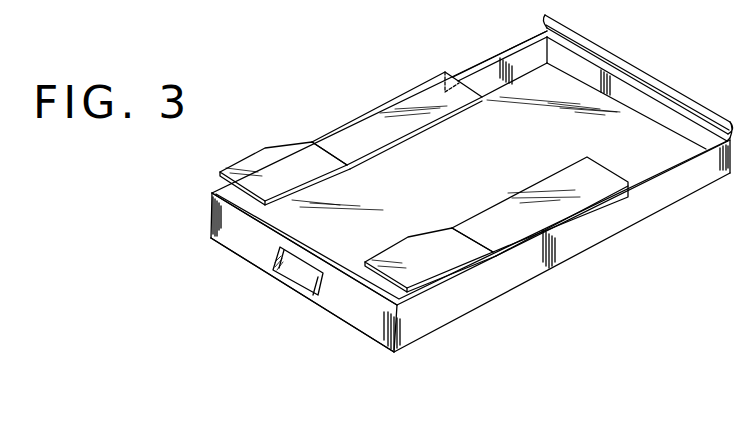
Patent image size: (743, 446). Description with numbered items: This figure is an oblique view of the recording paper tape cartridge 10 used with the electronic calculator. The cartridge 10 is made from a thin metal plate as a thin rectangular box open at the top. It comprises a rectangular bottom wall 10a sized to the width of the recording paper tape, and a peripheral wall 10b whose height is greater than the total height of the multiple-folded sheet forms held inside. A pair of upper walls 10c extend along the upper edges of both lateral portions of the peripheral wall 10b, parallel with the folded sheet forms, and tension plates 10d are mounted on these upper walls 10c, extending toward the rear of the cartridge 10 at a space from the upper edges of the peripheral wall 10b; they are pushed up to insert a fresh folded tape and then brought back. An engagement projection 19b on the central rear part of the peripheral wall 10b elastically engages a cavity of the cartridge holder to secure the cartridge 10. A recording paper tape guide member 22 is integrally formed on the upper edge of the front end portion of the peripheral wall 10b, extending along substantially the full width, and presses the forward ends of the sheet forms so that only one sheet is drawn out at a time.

The recording paper tape cartridge 10 is at (496, 58).
The bottom wall 10a is at (648, 165).
The peripheral wall 10b is at (233, 245).
The upper walls 10c is at (440, 104).
The tension plates 10d is at (252, 162).
The engagement projection 19b is at (304, 288).
The recording paper tape guide member 22 is at (634, 72).